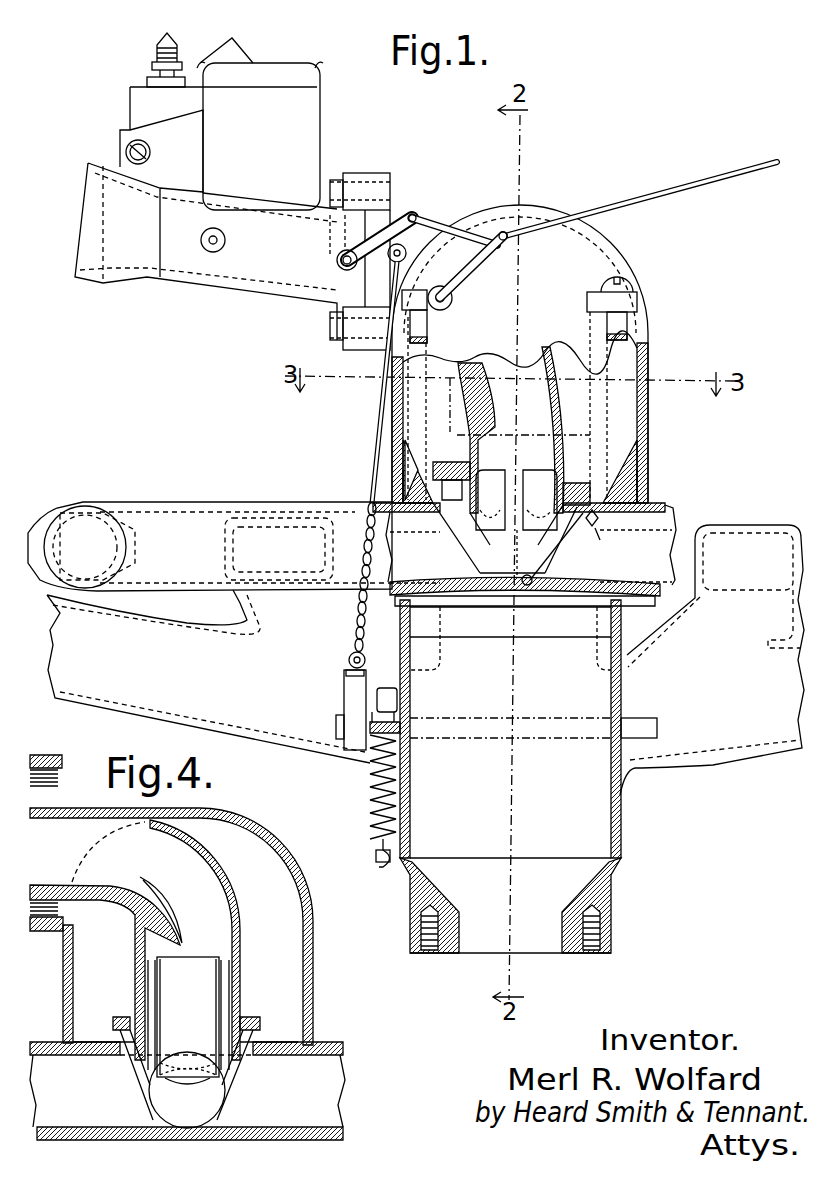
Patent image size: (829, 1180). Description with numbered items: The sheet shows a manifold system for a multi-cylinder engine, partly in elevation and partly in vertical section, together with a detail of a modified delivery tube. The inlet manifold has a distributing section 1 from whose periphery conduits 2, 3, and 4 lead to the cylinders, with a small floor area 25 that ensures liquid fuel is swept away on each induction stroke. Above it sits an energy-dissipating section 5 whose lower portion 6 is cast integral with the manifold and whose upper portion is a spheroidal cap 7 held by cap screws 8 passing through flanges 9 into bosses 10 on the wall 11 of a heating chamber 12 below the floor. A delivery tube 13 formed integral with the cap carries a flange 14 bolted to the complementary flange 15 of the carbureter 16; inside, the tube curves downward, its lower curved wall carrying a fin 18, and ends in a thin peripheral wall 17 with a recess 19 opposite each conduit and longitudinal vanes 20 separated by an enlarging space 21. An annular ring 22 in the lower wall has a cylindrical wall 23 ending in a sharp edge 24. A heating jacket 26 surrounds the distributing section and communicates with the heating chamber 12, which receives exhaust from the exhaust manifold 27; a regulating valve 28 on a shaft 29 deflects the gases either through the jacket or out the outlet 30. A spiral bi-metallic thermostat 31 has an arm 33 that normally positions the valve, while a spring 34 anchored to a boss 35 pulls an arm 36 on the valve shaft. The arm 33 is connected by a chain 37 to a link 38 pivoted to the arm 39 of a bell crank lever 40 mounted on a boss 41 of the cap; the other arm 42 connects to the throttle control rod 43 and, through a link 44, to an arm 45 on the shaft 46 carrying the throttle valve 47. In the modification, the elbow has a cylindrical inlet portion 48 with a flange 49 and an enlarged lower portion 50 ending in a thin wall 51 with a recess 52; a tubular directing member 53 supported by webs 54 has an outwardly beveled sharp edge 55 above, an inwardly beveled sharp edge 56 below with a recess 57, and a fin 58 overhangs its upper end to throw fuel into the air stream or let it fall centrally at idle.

In FIG. 4, the distributing section 1 is at (233, 1085).
In FIG. 1, the conduit 2 is at (660, 520).
In FIG. 4, the conduit 2 is at (323, 1058).
In FIG. 1, the conduit 3 is at (222, 508).
In FIG. 4, the conduit 3 is at (38, 1060).
In FIG. 1, the conduit 4 is at (548, 556).
In FIG. 1, the energy-dissipating section 5 is at (600, 360).
In FIG. 1, the lower portion of the energy-dissipating section 6 is at (638, 428).
In FIG. 1, the spheroidal cap 7 is at (612, 250).
In FIG. 1, the cap screws 8 is at (626, 286).
In FIG. 1, the flanges 9 is at (632, 301).
In FIG. 1, the bosses 10 is at (425, 622).
In FIG. 1, the wall of heating chamber 11 is at (622, 676).
In FIG. 1, the heating chamber 12 is at (585, 692).
In FIG. 1, the delivery tube 13 is at (568, 356).
In FIG. 1, the flange 14 is at (382, 176).
In FIG. 1, the complementary flange 15 is at (352, 178).
In FIG. 1, the carbureter 16 is at (250, 265).
In FIG. 1, the thin peripheral wall 17 is at (496, 518).
In FIG. 1, the fin 18 is at (508, 420).
In FIG. 1, the recess 19 is at (501, 552).
In FIG. 1, the longitudinal vanes 20 is at (548, 485).
In FIG. 1, the space 21 is at (487, 470).
In FIG. 1, the annular ring 22 is at (588, 480).
In FIG. 1, the cylindrical wall 23 is at (596, 521).
In FIG. 1, the sharp edge 24 is at (596, 539).
In FIG. 1, the floor area 25 is at (530, 600).
In FIG. 1, the heating jacket 26 is at (627, 465).
In FIG. 1, the exhaust manifold 27 is at (285, 712).
In FIG. 1, the regulating valve 28 is at (595, 820).
In FIG. 1, the shaft 29 is at (660, 727).
In FIG. 1, the outlet 30 is at (545, 935).
In FIG. 1, the thermostat 31 is at (360, 742).
In FIG. 1, the arm 33 is at (343, 684).
In FIG. 1, the spring 34 is at (370, 805).
In FIG. 1, the boss 35 is at (385, 867).
In FIG. 1, the arm 36 is at (397, 693).
In FIG. 1, the chain 37 is at (350, 615).
In FIG. 1, the link 38 is at (373, 452).
In FIG. 1, the arm of bell crank lever 39 is at (405, 248).
In FIG. 1, the bell crank lever 40 is at (455, 297).
In FIG. 1, the boss 41 is at (450, 305).
In FIG. 1, the arm of bell crank lever 42 is at (458, 272).
In FIG. 1, the throttle control rod 43 is at (640, 197).
In FIG. 1, the link 44 is at (440, 226).
In FIG. 1, the arm 45 is at (385, 222).
In FIG. 1, the shaft 46 is at (337, 263).
In FIG. 1, the throttle valve 47 is at (332, 254).
In FIG. 4, the cylindrical inlet portion 48 is at (85, 825).
In FIG. 4, the flange 49 is at (51, 887).
In FIG. 4, the enlarged lower portion 50 is at (242, 950).
In FIG. 4, the thin wall 51 is at (250, 1075).
In FIG. 4, the recess 52 is at (130, 1075).
In FIG. 4, the tubular directing member 53 is at (165, 980).
In FIG. 4, the webs 54 is at (145, 990).
In FIG. 4, the sharp edge 55 is at (210, 958).
In FIG. 4, the sharp edge 56 is at (187, 1090).
In FIG. 4, the recess 57 is at (187, 1094).
In FIG. 4, the fin 58 is at (185, 937).